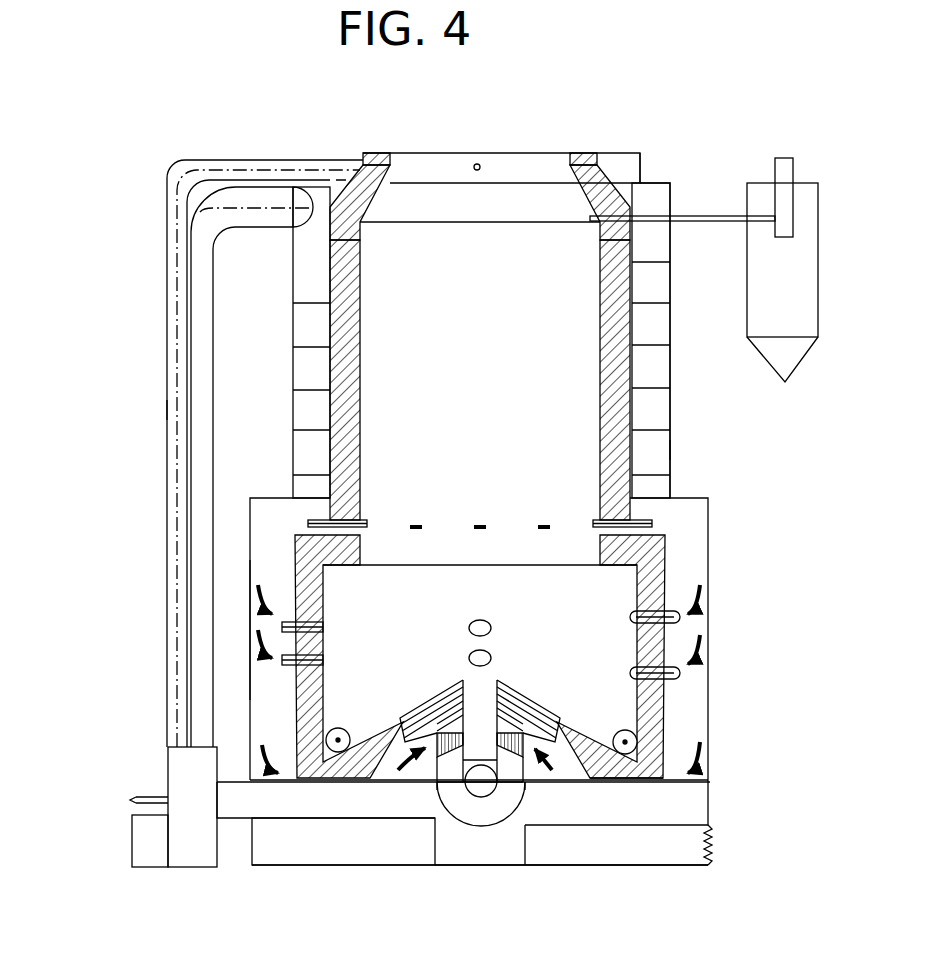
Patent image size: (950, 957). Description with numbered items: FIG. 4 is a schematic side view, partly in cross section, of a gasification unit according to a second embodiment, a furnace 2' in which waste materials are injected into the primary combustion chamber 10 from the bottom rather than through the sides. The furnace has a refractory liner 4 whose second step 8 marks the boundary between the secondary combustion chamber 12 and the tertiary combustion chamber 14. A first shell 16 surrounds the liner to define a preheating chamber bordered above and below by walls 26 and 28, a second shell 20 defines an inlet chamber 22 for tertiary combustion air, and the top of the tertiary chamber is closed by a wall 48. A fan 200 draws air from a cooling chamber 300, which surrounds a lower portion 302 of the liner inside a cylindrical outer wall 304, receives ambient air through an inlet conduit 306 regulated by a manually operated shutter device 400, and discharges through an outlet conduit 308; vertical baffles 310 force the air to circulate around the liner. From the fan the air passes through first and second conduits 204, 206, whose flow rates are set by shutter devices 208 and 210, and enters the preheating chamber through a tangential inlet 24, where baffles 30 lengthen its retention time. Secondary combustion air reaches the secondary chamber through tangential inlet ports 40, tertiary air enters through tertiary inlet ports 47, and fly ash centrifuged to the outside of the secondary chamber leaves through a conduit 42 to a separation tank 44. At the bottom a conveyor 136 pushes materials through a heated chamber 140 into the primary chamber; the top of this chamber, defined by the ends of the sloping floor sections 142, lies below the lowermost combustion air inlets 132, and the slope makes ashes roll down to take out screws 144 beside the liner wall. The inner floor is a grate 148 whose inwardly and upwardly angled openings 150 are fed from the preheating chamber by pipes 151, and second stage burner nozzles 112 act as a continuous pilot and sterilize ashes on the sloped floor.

The furnace 2' is at (725, 443).
The refractory liner 4 is at (632, 298).
The second step 8 is at (383, 197).
The primary combustion chamber 10 is at (553, 617).
The secondary combustion chamber 12 is at (524, 372).
The tertiary combustion chamber 14 is at (522, 181).
The first generally cylindrical shell 16 is at (672, 388).
The second shell 20 is at (642, 163).
The tertiary air inlet chamber 22 is at (231, 433).
The inlet 24 is at (297, 225).
The top wall 26 is at (663, 184).
The bottom wall 28 is at (708, 770).
The baffles 30 is at (305, 392).
The secondary air inlet ports 40 is at (308, 521).
The conduit 42 is at (697, 222).
The separation tank 44 is at (818, 298).
The tertiary inlet ports 47 is at (380, 154).
The wall 48 is at (620, 152).
The second stage burner nozzles 112 is at (520, 712).
The lowermost combustion air inlets 132 is at (667, 612).
The conveyor 136 is at (495, 781).
The chamber 140 is at (473, 752).
The sloping sections 142 is at (365, 716).
The take out screws 144 is at (632, 738).
The grate 148 is at (438, 695).
The openings 150 is at (467, 707).
The pipes 151 is at (650, 778).
The fan 200 is at (150, 772).
The first conduit 204 is at (195, 411).
The second conduit 206 is at (168, 620).
The shutter device 208 is at (168, 745).
The shutter device 210 is at (207, 741).
The cooling chamber 300 is at (488, 859).
The lower portion of the refractory liner 302 is at (492, 828).
The outer wall 304 is at (433, 843).
The inlet conduit 306 is at (620, 865).
The outlet conduit 308 is at (313, 825).
The vertical baffles 310 is at (520, 826).
The manually operated shutter device 400 is at (713, 848).